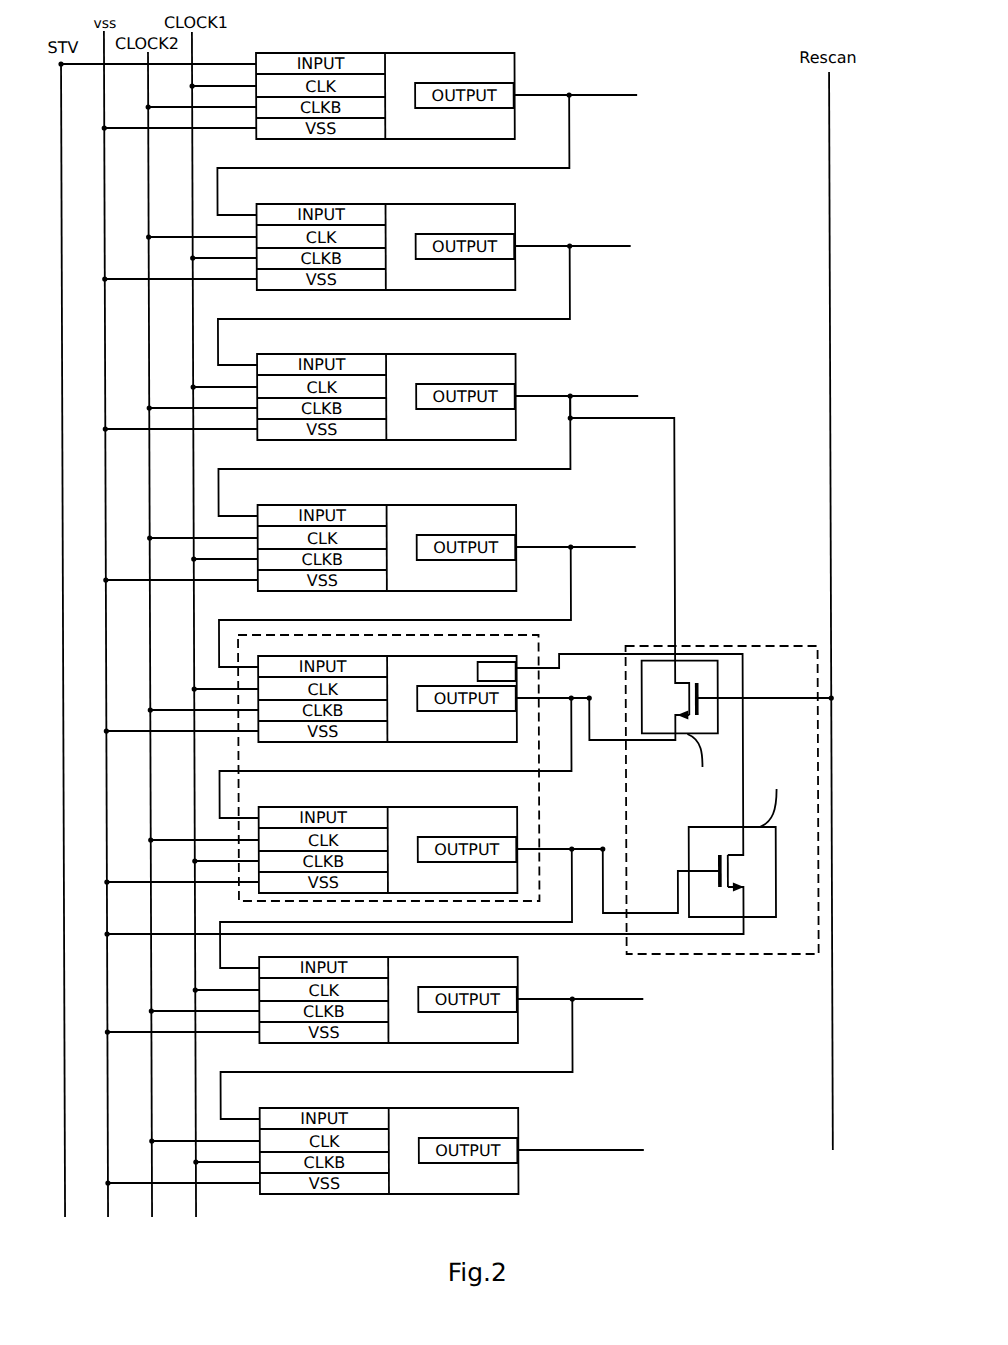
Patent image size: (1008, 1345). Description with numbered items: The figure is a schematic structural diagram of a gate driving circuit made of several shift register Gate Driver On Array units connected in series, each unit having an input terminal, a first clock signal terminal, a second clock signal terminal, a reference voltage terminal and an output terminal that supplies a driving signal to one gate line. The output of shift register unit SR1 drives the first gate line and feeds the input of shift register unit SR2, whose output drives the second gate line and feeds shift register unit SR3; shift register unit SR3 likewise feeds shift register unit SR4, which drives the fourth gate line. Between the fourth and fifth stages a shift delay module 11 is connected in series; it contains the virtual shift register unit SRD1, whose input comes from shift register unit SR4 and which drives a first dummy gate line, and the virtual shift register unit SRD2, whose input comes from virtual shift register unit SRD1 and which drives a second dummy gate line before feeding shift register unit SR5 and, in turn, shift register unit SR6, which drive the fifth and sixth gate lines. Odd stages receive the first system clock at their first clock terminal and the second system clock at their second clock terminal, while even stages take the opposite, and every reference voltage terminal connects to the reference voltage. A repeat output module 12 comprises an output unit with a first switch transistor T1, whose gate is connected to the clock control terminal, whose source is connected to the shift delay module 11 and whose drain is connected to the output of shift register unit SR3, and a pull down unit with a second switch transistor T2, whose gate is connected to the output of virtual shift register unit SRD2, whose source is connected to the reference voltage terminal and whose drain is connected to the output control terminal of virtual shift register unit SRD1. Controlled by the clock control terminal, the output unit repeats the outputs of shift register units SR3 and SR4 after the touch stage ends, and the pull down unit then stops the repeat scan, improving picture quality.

The shift delay module 11 is at (364, 774).
The repeat output module 12 is at (506, 675).
The shift register unit SR1 is at (361, 134).
The shift register unit SR2 is at (379, 284).
The shift register unit SR3 is at (378, 435).
The shift register unit SR4 is at (374, 586).
The virtual shift register unit SRD1 is at (361, 737).
The virtual shift register unit SRD2 is at (355, 887).
The shift register unit SR5 is at (388, 1038).
The shift register unit SR6 is at (388, 1151).
The first switch transistor T1 is at (701, 592).
The second switch transistor T2 is at (448, 850).